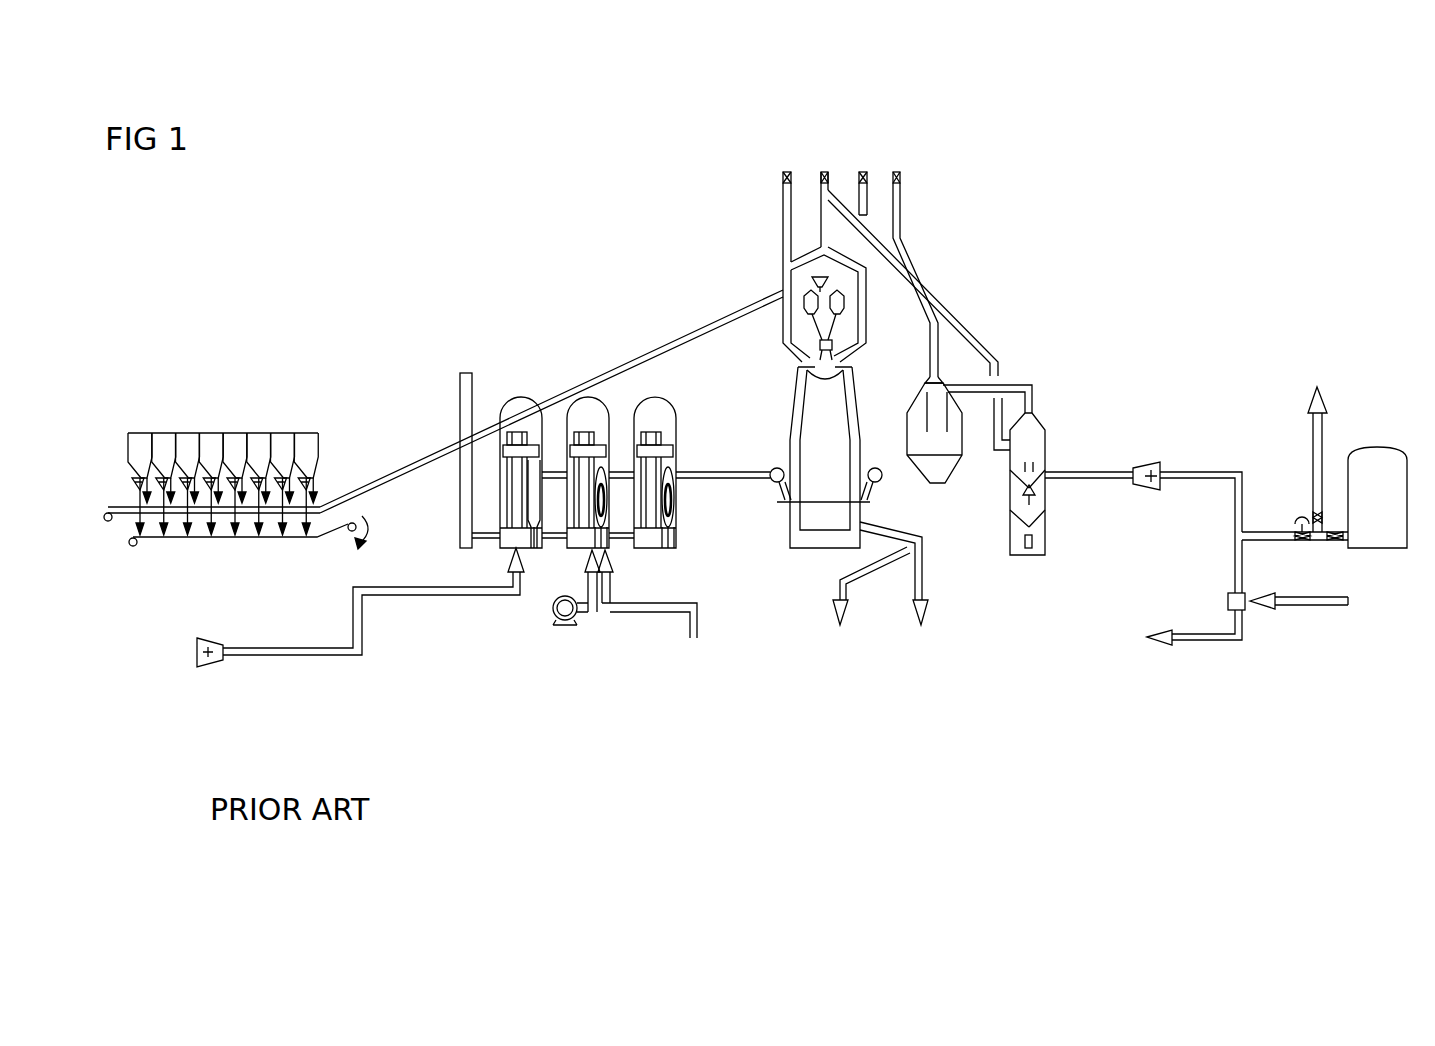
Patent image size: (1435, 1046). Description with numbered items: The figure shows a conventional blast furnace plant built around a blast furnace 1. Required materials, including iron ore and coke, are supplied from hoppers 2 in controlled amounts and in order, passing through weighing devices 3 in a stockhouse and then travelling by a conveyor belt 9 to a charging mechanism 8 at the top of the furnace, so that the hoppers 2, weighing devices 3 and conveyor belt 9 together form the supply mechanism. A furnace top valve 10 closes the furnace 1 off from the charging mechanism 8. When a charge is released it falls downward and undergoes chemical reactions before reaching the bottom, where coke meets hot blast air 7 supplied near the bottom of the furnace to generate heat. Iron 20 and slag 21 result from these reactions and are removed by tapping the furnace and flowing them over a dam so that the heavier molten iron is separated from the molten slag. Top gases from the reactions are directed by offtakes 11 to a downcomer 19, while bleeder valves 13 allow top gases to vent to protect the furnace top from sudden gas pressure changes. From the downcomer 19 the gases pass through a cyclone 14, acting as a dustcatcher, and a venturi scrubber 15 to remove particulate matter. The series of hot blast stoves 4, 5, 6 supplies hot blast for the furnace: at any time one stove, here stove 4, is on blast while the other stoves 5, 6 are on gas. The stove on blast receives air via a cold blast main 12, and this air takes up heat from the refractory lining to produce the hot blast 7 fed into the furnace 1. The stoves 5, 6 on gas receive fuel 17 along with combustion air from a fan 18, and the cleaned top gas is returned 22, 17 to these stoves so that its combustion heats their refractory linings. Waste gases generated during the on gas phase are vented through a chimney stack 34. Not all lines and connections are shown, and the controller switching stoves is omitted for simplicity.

The blast furnace 1 is at (793, 422).
The hoppers 2 is at (212, 440).
The weighing devices 3 is at (218, 542).
The hot blast stove 4 is at (518, 406).
The hot blast stove 5 is at (597, 406).
The hot blast stove 6 is at (668, 406).
The hot blast air 7 is at (726, 480).
The charging mechanism 8 is at (810, 316).
The conveyor belt 9 is at (418, 456).
The furnace top valve 10 is at (838, 344).
The offtakes 11 is at (866, 312).
The cold blast main 12 is at (440, 598).
The bleeder valves 13 is at (789, 167).
The cyclone 14 is at (957, 483).
The venturi scrubber 15 is at (1028, 558).
The fuel supply 17 is at (700, 625).
The fan 18 is at (566, 624).
The downcomer 19 is at (912, 288).
The iron 20 is at (866, 603).
The slag 21 is at (899, 591).
The cleaned top gas return 22 is at (1176, 632).
The chimney stack 34 is at (460, 510).